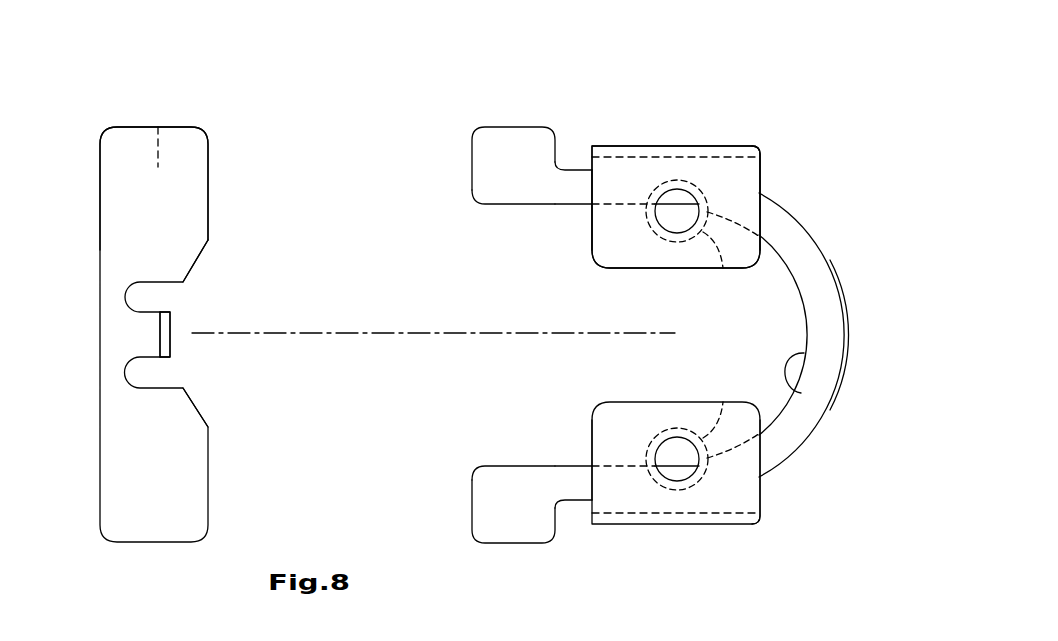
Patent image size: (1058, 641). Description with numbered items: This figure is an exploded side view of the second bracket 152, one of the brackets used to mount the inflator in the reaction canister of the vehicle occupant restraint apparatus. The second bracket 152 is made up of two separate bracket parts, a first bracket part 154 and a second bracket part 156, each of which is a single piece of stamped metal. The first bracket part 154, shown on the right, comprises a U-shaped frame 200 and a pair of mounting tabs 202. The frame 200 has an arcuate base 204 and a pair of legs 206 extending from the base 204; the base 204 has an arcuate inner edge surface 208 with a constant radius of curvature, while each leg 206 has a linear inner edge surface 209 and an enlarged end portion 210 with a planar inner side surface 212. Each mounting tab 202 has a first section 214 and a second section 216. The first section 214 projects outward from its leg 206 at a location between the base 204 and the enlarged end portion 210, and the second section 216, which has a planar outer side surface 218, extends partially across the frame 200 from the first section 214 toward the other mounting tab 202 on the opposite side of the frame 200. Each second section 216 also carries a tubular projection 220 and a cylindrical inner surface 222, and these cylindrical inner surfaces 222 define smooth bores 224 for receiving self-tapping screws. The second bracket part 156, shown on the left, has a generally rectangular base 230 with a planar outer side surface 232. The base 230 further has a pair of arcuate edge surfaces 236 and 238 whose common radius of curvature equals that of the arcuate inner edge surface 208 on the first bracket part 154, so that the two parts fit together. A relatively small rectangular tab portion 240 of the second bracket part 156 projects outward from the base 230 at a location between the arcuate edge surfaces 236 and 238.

The second bracket 152 is at (776, 40).
The first bracket part 154 is at (664, 112).
The second bracket part 156 is at (164, 84).
The U-shaped frame 200 is at (803, 223).
The mounting tab 202 is at (760, 170).
The arcuate base 204 is at (825, 320).
The leg 206 is at (575, 185).
The arcuate inner edge surface 208 is at (820, 400).
The linear inner edge surface 209 is at (550, 205).
The enlarged end portion 210 is at (513, 127).
The planar inner side surface 212 is at (483, 158).
The first section 214 is at (683, 158).
The second section 216 is at (737, 183).
The planar outer side surface 218 is at (600, 222).
The tubular projection 220 is at (723, 268).
The cylindrical inner surface 222 is at (668, 232).
The smooth bore 224 is at (647, 221).
The generally rectangular base 230 is at (210, 162).
The planar outer side surface 232 is at (158, 127).
The arcuate edge surface 236 is at (197, 259).
The arcuate edge surface 238 is at (192, 398).
The rectangular tab portion 240 is at (170, 324).